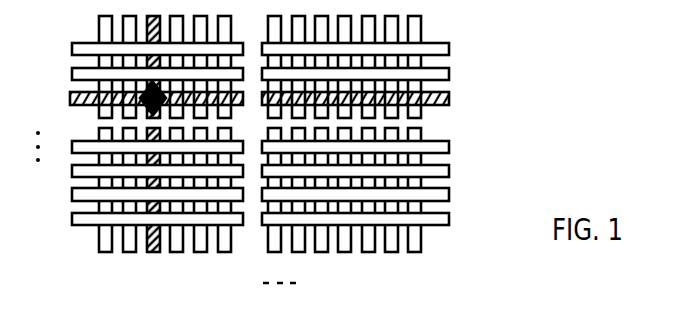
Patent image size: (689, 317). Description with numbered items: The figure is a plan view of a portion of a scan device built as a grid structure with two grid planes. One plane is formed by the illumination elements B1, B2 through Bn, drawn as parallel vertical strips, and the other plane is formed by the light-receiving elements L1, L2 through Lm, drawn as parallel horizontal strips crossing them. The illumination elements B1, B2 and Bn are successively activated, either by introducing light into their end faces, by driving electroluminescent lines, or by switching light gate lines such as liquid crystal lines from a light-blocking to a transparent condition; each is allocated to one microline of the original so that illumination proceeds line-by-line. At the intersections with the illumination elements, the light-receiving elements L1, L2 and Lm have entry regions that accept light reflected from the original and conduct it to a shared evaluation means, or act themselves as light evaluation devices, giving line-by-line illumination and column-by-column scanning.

The light-receiving element L1 is at (67, 52).
The light-receiving element L2 is at (67, 77).
The light-receiving element Lm is at (70, 222).
The illumination element B1 is at (105, 252).
The illumination element B2 is at (131, 252).
The illumination element Bn is at (415, 252).